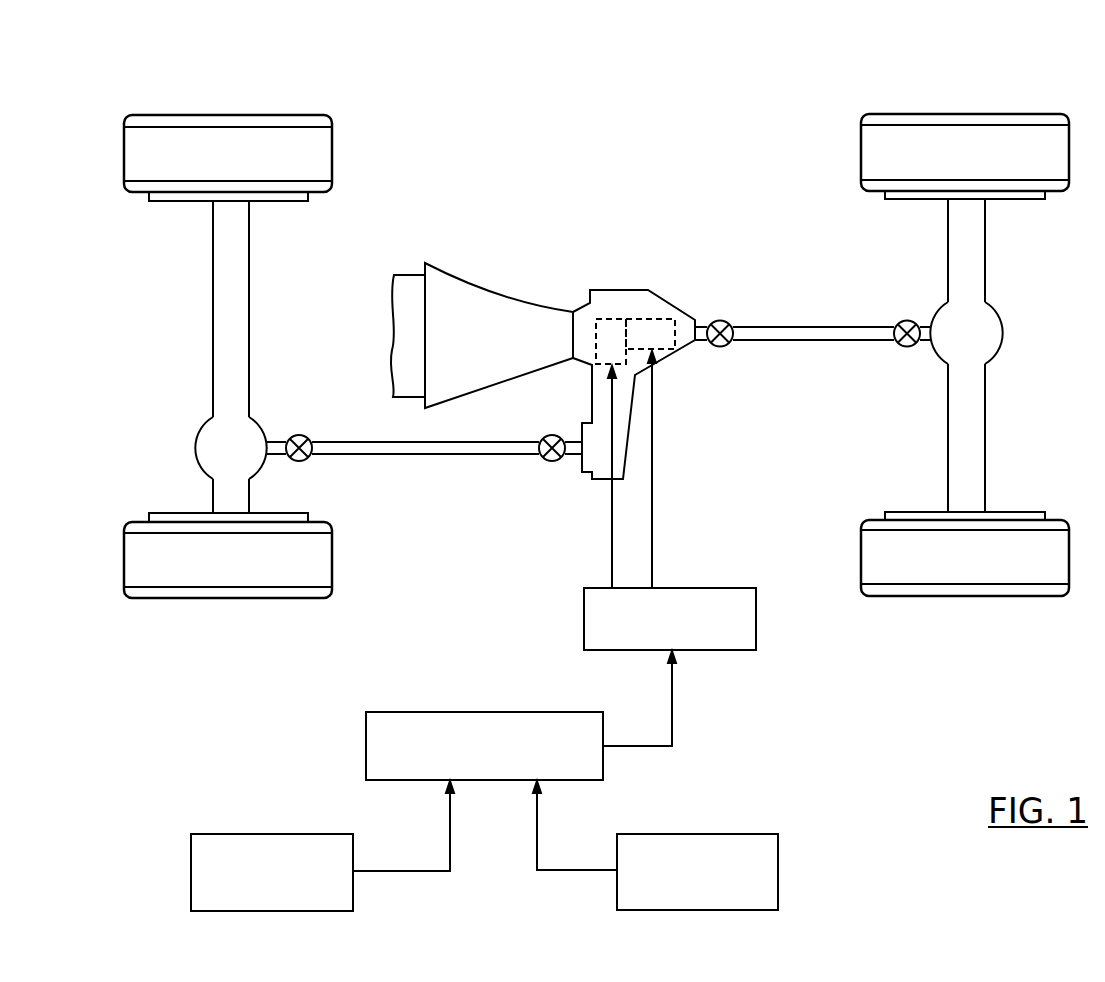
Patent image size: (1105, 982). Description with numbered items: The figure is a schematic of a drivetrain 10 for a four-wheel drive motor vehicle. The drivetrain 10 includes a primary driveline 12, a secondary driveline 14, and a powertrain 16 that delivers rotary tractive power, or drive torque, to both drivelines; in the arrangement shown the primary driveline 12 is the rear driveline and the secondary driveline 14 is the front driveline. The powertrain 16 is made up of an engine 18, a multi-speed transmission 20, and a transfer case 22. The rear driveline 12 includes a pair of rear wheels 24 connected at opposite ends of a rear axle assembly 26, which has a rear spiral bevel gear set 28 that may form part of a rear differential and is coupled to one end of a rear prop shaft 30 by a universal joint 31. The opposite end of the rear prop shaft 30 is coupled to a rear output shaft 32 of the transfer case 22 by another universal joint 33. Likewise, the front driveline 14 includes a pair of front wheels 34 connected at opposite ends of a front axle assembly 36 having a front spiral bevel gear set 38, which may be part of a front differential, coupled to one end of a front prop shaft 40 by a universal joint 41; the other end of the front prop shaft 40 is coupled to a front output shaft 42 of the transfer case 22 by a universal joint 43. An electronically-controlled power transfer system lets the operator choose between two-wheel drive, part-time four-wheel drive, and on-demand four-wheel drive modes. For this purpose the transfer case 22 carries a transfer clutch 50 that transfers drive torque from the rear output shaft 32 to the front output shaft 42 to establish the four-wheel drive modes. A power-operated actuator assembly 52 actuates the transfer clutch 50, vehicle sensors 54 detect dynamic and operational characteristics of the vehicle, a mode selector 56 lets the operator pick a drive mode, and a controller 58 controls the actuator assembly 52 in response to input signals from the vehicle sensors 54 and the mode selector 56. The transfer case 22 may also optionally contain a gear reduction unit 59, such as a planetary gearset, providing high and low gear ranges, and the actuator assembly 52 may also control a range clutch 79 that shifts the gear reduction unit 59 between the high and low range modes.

The drivetrain 10 is at (730, 128).
The primary driveline 12 is at (897, 303).
The secondary driveline 14 is at (375, 455).
The powertrain 16 is at (475, 283).
The engine 18 is at (417, 308).
The multi-speed transmission 20 is at (503, 348).
The transfer case 22 is at (605, 297).
The rear wheels 24 is at (963, 114).
The rear axle assembly 26 is at (962, 240).
The rear spiral bevel gear set 28 is at (1003, 336).
The rear prop shaft 30 is at (873, 342).
The universal joint 31 is at (907, 348).
The rear output shaft 32 is at (700, 327).
The universal joint 33 is at (726, 320).
The front wheels 34 is at (226, 115).
The front axle assembly 36 is at (232, 255).
The front spiral bevel gear set 38 is at (210, 436).
The front prop shaft 40 is at (465, 455).
The universal joint 41 is at (299, 435).
The front output shaft 42 is at (574, 457).
The universal joint 43 is at (545, 462).
The transfer clutch 50 is at (634, 328).
The actuator assembly 52 is at (737, 651).
The vehicle sensors 54 is at (778, 869).
The mode selector 56 is at (191, 870).
The controller 58 is at (457, 712).
The gear reduction unit 59 is at (610, 333).
The range clutch 79 is at (610, 358).